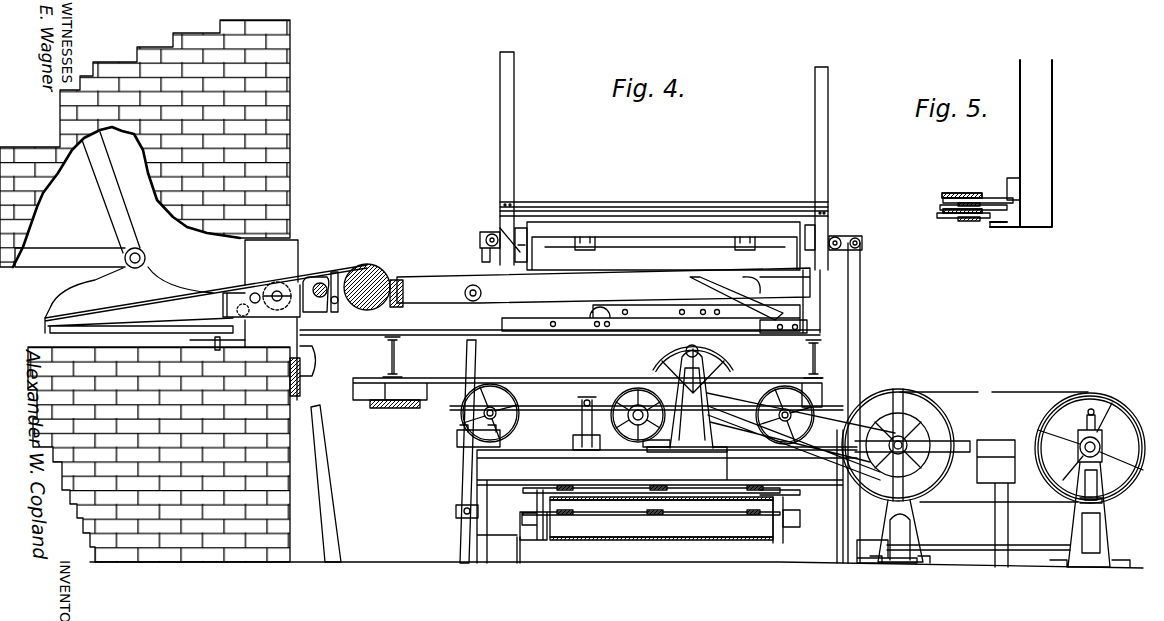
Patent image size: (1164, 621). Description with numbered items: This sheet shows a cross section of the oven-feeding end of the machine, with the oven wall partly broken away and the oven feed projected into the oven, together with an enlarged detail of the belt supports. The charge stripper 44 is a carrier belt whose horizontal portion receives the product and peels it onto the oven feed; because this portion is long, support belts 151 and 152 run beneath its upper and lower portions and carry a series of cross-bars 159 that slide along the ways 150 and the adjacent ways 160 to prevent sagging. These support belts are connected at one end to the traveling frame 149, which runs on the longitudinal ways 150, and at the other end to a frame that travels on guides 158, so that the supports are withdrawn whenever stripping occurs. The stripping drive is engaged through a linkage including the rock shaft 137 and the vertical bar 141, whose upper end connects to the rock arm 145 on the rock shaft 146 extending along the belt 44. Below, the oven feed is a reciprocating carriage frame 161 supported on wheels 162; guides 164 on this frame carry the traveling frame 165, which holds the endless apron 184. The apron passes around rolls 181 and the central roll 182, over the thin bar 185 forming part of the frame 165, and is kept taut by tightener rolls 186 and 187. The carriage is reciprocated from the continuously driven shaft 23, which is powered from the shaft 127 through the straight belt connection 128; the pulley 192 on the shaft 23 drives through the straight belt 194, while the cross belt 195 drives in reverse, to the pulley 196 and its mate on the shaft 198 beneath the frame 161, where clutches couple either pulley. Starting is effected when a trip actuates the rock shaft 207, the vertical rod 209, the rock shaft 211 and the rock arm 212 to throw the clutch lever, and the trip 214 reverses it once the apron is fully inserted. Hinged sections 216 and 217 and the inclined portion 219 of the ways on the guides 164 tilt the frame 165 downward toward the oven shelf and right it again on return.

In FIG. 4, the shaft 23 is at (926, 441).
In FIG. 4, the charge stripper 44 is at (598, 500).
In FIG. 5, the charge stripper 44 is at (953, 192).
In FIG. 4, the shaft 127 is at (1102, 447).
In FIG. 4, the straight belt connection 128 is at (1038, 392).
In FIG. 4, the rock shaft 137 is at (969, 544).
In FIG. 4, the vertical bar 141 is at (861, 341).
In FIG. 4, the rock arm 145 is at (860, 240).
In FIG. 4, the rock shaft 146 is at (838, 236).
In FIG. 4, the traveling frame 149 is at (684, 222).
In FIG. 4, the longitudinal ways 150 is at (518, 228).
In FIG. 5, the longitudinal ways 150 is at (998, 227).
In FIG. 4, the belt 151 is at (637, 505).
In FIG. 5, the belt 151 is at (945, 201).
In FIG. 4, the belt 152 is at (585, 490).
In FIG. 5, the belt 152 is at (970, 221).
In FIG. 4, the guides 158 is at (797, 540).
In FIG. 4, the cross-bars 159 is at (746, 505).
In FIG. 5, the cross-bars 159 is at (943, 216).
In FIG. 5, the ways 160 is at (1011, 190).
In FIG. 4, the carriage frame 161 is at (587, 393).
In FIG. 4, the wheels 162 is at (519, 412).
In FIG. 4, the guides 164 is at (603, 285).
In FIG. 4, the traveling frame 165 is at (423, 285).
In FIG. 4, the rolls 181 is at (368, 264).
In FIG. 4, the roll 182 is at (273, 286).
In FIG. 4, the apron 184 is at (243, 284).
In FIG. 4, the thin bar 185 is at (87, 313).
In FIG. 4, the tightener roll 186 is at (322, 281).
In FIG. 4, the tightener roll 187 is at (345, 300).
In FIG. 4, the pulley 192 is at (920, 432).
In FIG. 4, the straight belt 194 is at (751, 450).
In FIG. 4, the cross belt 195 is at (812, 447).
In FIG. 4, the pulley 196 is at (624, 440).
In FIG. 4, the shaft 198 is at (636, 403).
In FIG. 4, the rock shaft 207 is at (488, 234).
In FIG. 4, the vertical rod 209 is at (468, 357).
In FIG. 4, the rock shaft 211 is at (538, 447).
In FIG. 4, the rock arm 212 is at (581, 423).
In FIG. 4, the trip 214 is at (327, 486).
In FIG. 4, the hinged section 216 is at (737, 324).
In FIG. 4, the hinged section 217 is at (563, 326).
In FIG. 4, the inclined portion 219 is at (736, 298).